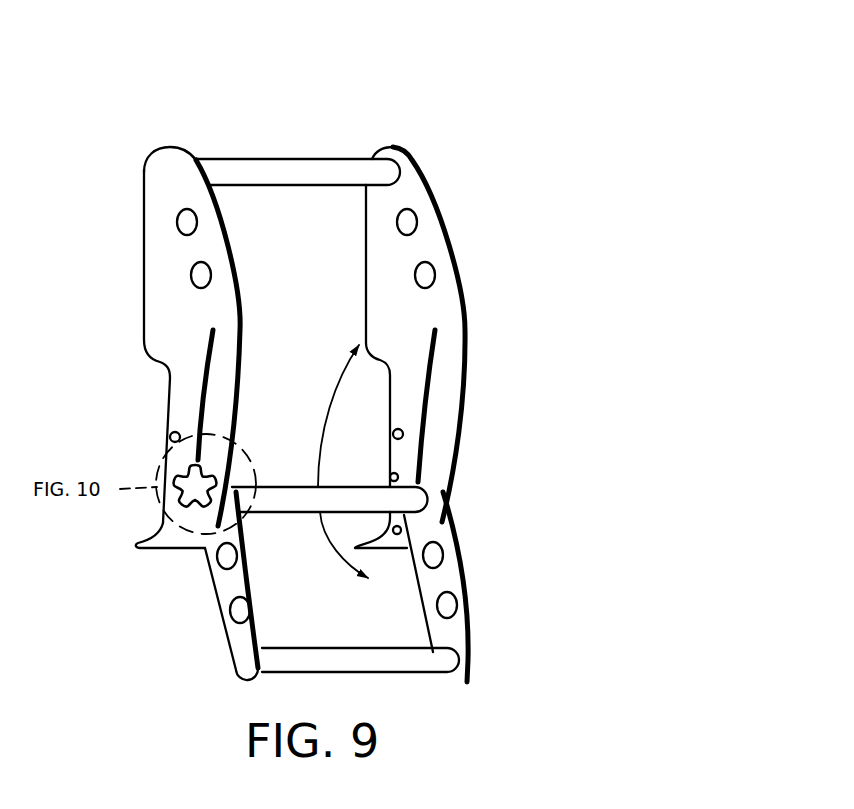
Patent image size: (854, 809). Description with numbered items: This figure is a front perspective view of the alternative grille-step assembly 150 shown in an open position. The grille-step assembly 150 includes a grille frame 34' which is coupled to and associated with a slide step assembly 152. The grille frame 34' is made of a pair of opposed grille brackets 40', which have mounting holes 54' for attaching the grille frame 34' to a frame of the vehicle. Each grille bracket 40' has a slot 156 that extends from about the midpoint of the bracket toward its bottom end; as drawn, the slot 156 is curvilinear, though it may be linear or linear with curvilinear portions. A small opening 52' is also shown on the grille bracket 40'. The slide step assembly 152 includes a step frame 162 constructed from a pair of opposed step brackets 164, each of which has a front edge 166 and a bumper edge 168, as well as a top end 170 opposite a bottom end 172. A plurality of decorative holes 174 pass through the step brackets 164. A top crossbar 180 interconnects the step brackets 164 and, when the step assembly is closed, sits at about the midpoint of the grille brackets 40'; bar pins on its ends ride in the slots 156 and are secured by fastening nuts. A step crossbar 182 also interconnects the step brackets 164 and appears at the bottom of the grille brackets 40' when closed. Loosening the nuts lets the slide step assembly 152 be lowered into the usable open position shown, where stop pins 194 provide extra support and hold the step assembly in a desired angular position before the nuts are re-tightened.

The grille frame 34' is at (343, 400).
The grille-step assembly 150 is at (155, 134).
The grille bracket 40' is at (345, 347).
The mounting hole 54' is at (298, 122).
The slide step assembly 152 is at (283, 468).
The slot 156 is at (434, 354).
The small aperture 52' is at (469, 414).
The top crossbar 180 is at (347, 497).
The top end 170 is at (428, 480).
The stop pin 194 is at (402, 528).
The step frame 162 is at (480, 548).
The step bracket 164 is at (470, 580).
The front edge 166 is at (458, 603).
The bumper edge 168 is at (410, 574).
The decorative hole 174 is at (468, 612).
The bottom end 172 is at (468, 684).
The step crossbar 182 is at (330, 672).